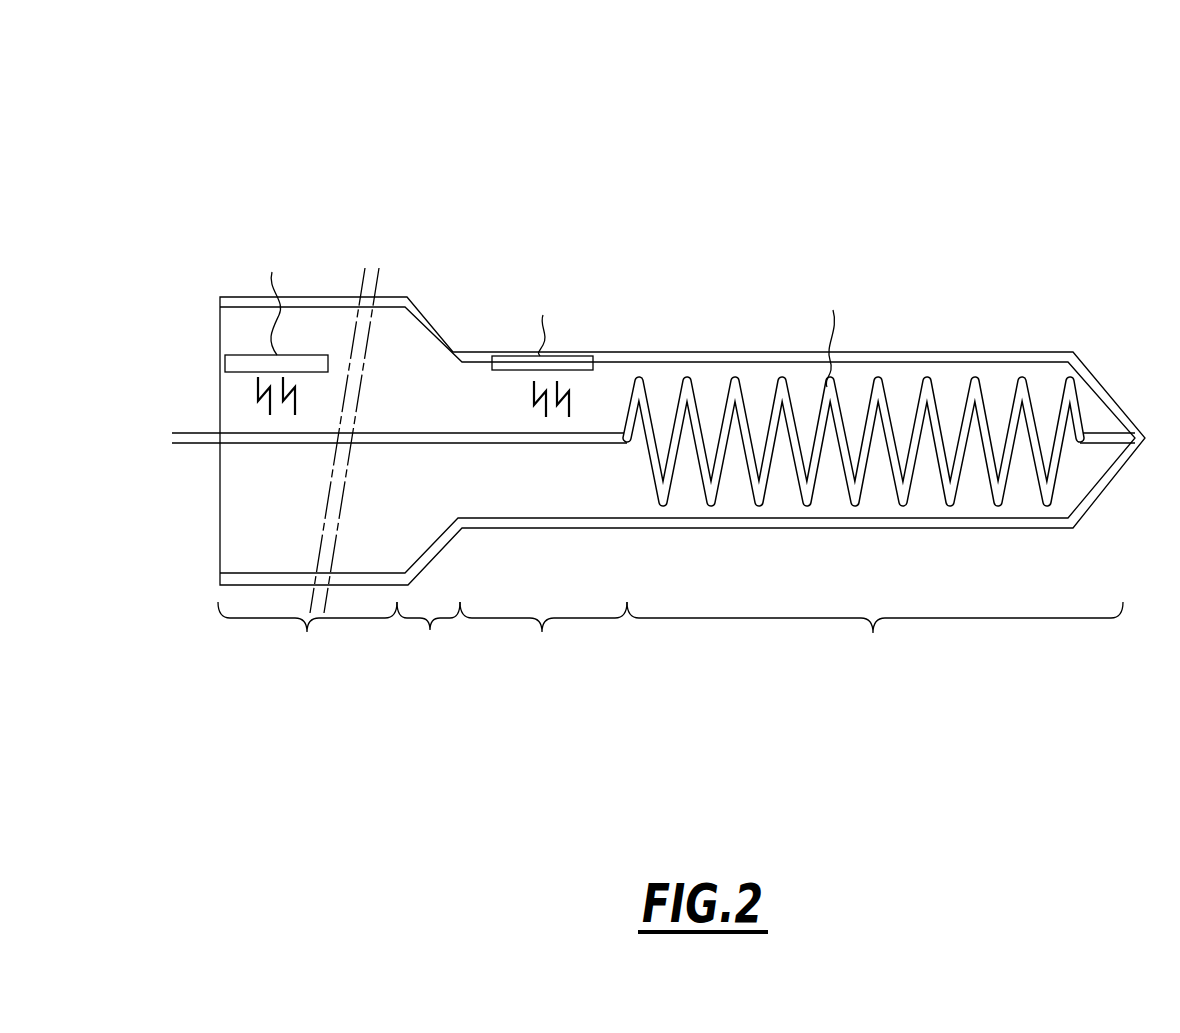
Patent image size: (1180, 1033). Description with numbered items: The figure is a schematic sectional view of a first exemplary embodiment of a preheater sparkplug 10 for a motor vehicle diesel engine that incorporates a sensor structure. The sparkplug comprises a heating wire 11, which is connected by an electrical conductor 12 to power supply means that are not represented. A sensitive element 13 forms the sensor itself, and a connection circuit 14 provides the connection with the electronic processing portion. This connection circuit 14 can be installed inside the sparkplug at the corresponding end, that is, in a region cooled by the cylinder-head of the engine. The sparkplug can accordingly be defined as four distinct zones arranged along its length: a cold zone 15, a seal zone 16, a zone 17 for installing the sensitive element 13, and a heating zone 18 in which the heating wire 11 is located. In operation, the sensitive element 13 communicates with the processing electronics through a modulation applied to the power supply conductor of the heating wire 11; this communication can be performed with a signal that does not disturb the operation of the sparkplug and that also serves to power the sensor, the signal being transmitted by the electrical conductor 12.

The preheater sparkplug 10 is at (1003, 165).
The heating wire 11 is at (942, 390).
The electrical conductor 12 is at (465, 447).
The sensitive element 13 is at (582, 352).
The connection circuit 14 is at (220, 358).
The cold zone 15 is at (307, 650).
The seal zone 16 is at (430, 645).
The zone for installing the sensitive element 17 is at (543, 686).
The heating zone 18 is at (875, 652).